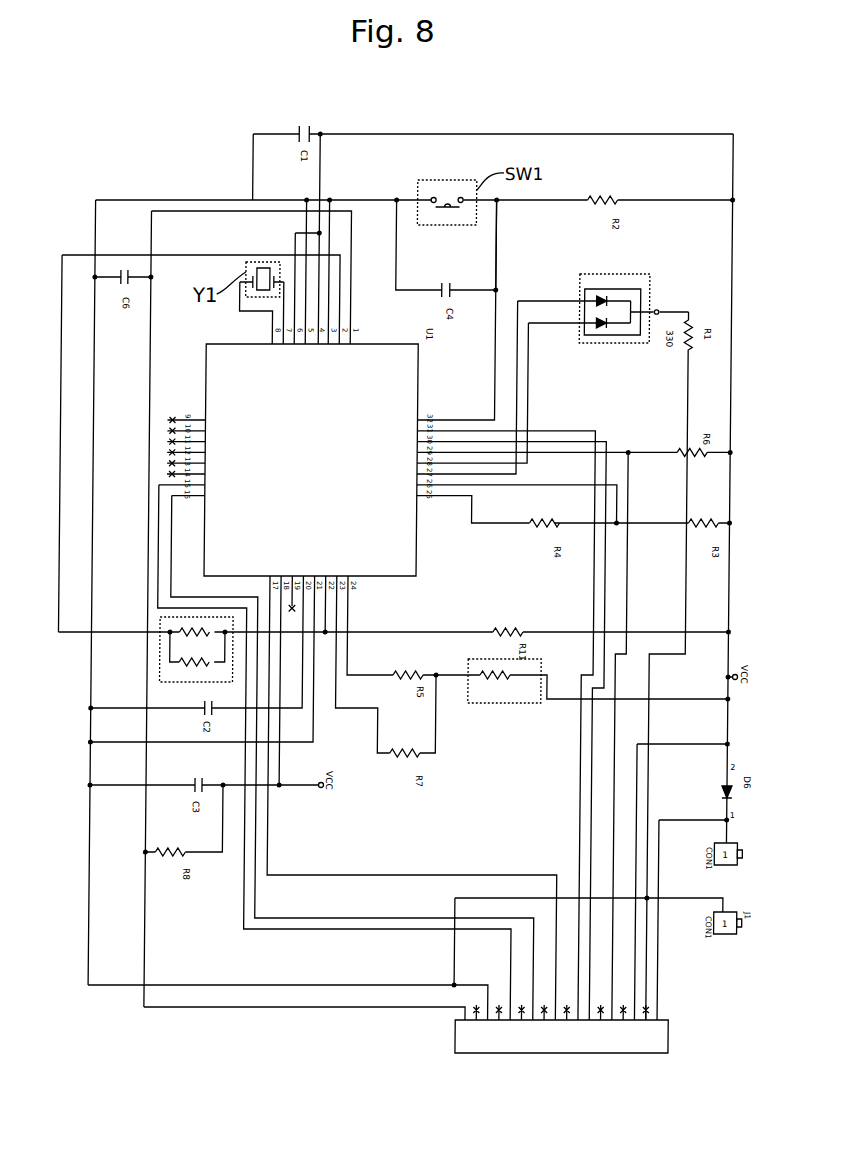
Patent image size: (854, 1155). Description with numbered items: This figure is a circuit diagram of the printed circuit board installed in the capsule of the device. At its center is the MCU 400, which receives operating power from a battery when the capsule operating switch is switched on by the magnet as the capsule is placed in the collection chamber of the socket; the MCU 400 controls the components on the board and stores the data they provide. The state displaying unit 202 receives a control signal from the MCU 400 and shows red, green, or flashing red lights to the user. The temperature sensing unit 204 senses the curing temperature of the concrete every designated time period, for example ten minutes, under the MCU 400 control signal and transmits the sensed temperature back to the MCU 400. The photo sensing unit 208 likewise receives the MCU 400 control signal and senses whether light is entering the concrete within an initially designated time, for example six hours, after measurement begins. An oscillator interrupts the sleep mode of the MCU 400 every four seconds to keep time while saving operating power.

The state displaying unit 202 is at (647, 280).
The temperature sensing unit 204 is at (512, 703).
The photo sensing unit 208 is at (160, 658).
The MCU 400 is at (416, 552).